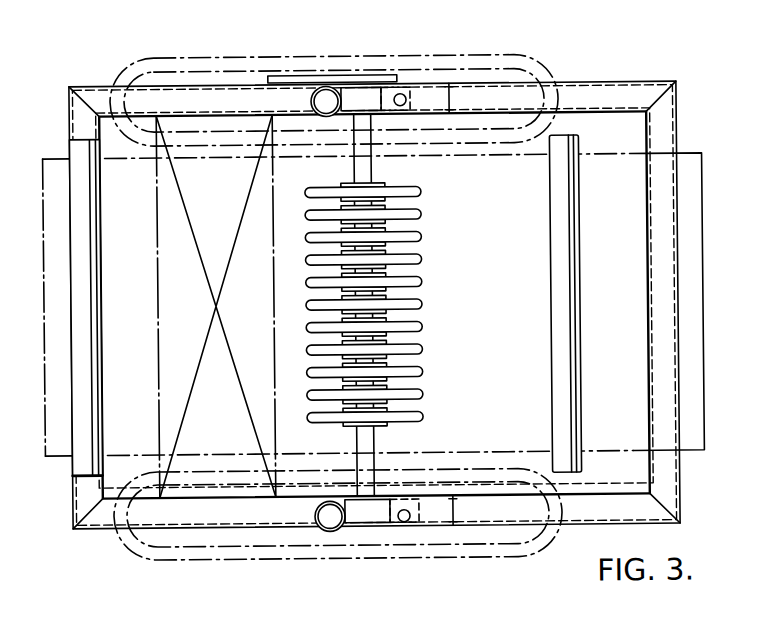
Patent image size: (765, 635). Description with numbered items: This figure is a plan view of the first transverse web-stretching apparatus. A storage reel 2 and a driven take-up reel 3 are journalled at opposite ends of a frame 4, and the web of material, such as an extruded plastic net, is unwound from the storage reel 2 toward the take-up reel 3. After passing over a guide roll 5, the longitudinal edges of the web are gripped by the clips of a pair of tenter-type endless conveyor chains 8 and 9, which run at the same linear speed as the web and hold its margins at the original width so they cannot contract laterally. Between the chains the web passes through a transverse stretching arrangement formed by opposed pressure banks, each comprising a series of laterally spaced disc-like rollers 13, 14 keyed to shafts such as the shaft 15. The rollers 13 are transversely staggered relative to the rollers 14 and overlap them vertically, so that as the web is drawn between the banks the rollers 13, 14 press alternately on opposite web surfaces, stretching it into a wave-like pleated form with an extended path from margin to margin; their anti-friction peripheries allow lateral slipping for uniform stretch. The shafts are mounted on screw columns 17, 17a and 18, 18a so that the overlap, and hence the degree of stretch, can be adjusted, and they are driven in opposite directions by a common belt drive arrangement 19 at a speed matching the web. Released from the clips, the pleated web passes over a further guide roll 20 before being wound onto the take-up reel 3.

The storage reel 2 is at (58, 170).
The take-up reel 3 is at (694, 170).
The frame 4 is at (612, 95).
The guide roll 5 is at (82, 430).
The endless conveyor chain 8 is at (195, 553).
The endless conveyor chain 9 is at (180, 60).
The rollers 13 is at (308, 258).
The rollers 14 is at (424, 232).
The shaft 15 is at (368, 170).
The screw column 17 is at (325, 96).
The screw column 17a is at (404, 97).
The screw column 18 is at (334, 520).
The screw column 18a is at (401, 525).
The belt drive arrangement 19 is at (365, 75).
The guide roll 20 is at (578, 245).